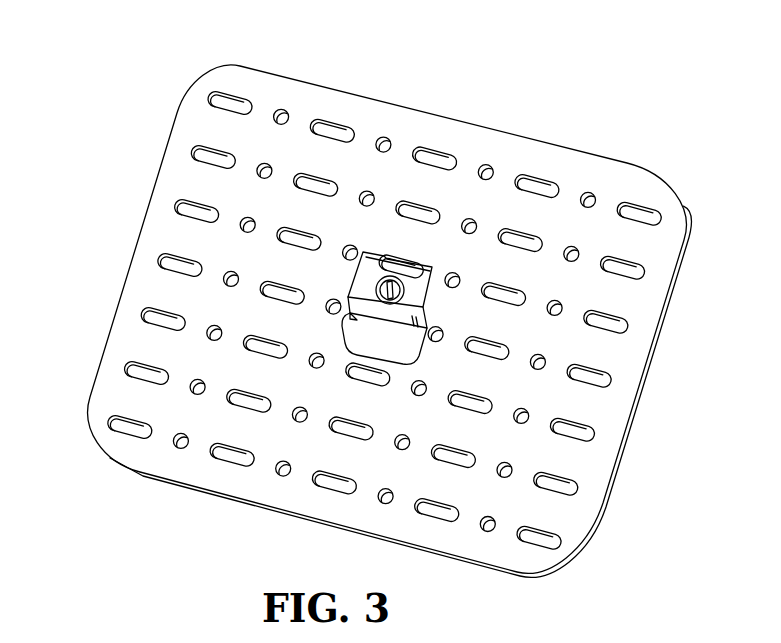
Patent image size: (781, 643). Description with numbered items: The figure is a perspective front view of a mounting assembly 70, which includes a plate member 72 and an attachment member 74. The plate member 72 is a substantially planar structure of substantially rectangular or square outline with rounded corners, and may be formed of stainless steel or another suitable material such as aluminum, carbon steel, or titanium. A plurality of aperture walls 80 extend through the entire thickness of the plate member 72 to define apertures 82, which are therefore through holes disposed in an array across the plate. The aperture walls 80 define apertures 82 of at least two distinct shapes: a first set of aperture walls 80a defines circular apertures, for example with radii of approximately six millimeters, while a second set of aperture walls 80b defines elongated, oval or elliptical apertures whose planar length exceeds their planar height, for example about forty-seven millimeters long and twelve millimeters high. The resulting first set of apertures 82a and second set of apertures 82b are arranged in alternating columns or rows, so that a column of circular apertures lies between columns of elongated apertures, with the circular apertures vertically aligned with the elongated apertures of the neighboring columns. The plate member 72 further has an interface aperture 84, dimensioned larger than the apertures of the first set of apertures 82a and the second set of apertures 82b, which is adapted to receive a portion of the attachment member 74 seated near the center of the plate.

The mounting assembly 70 is at (622, 118).
The plate member 72 is at (673, 202).
The attachment member 74 is at (421, 292).
The aperture walls 80 is at (198, 205).
The first set of aperture walls 80a is at (262, 163).
The second set of aperture walls 80b is at (232, 93).
The apertures 82 is at (150, 375).
The first set of apertures 82a is at (485, 170).
The second set of apertures 82b is at (220, 160).
The interface aperture 84 is at (382, 340).